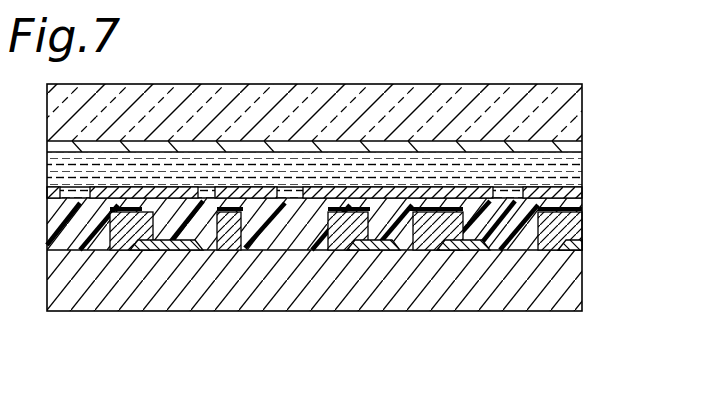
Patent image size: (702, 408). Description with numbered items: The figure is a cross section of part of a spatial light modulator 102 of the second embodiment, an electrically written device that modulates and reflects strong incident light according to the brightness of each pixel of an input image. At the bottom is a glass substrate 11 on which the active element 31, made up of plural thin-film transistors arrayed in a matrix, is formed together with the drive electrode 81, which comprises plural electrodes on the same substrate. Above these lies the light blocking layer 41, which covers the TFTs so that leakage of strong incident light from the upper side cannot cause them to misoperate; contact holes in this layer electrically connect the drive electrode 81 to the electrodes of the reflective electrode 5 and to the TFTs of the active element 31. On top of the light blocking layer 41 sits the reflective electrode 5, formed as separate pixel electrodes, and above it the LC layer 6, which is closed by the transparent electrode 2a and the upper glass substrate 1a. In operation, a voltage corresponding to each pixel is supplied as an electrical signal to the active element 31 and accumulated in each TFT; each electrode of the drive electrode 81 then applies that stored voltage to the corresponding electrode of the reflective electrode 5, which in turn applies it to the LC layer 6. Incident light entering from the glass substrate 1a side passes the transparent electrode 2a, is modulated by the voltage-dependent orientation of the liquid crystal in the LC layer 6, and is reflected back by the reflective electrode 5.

The glass substrate 1a is at (583, 113).
The transparent electrode 2a is at (583, 142).
The LC layer 6 is at (583, 162).
The reflective electrode 5 is at (583, 187).
The light blocking layer 41 is at (583, 205).
The active element 31 is at (583, 225).
The drive electrode 81 is at (583, 248).
The glass substrate 11 is at (583, 278).
The spatial light modulator 102 is at (328, 328).